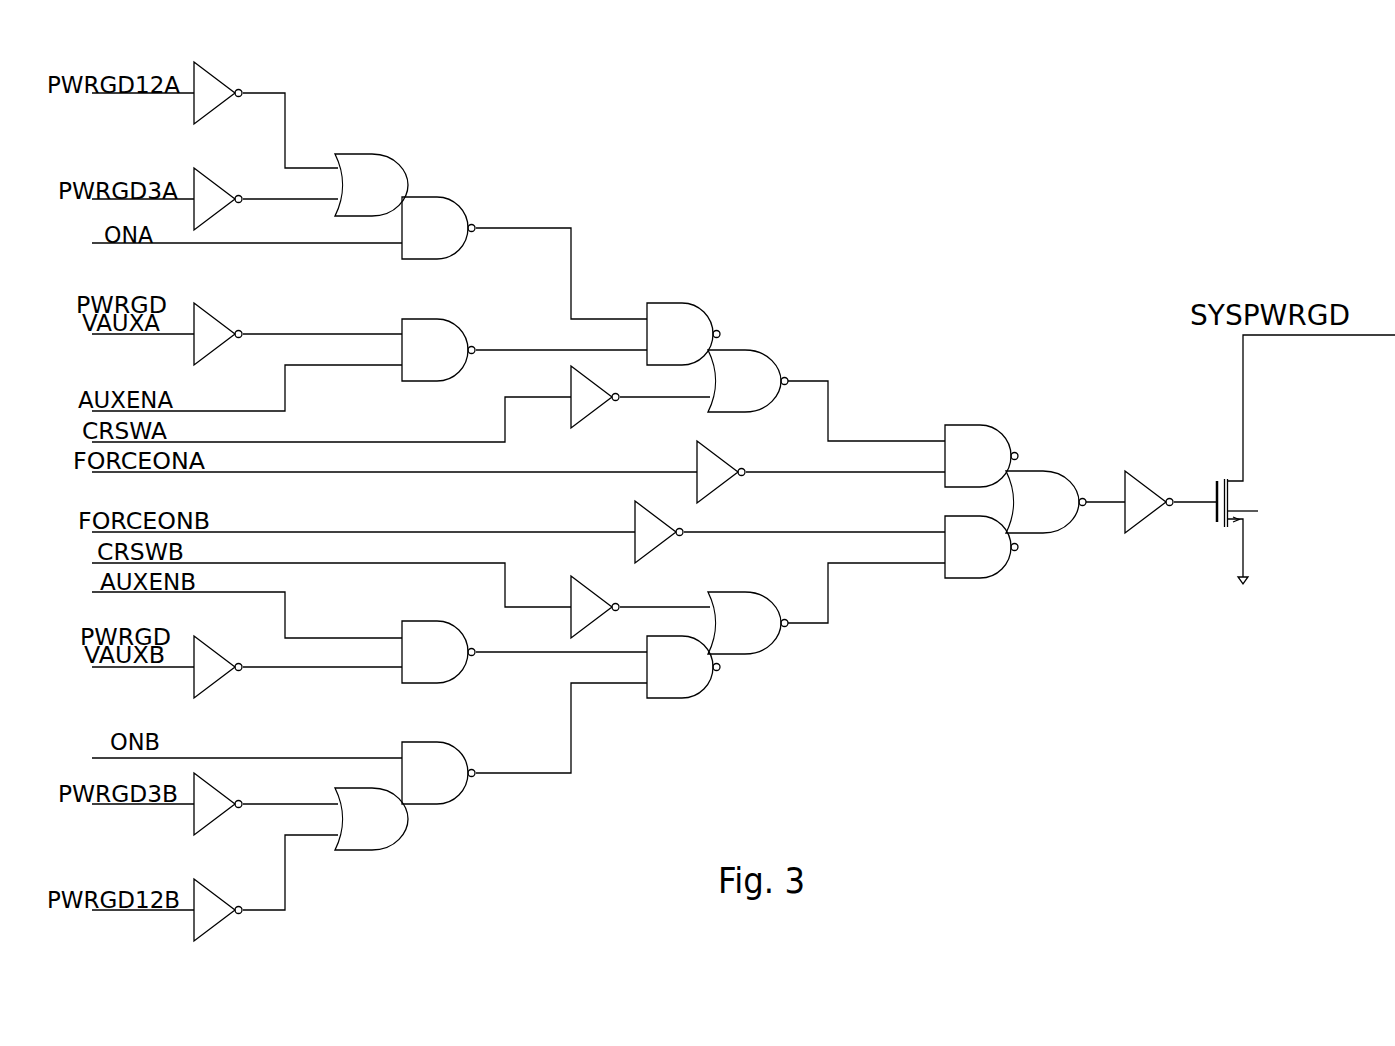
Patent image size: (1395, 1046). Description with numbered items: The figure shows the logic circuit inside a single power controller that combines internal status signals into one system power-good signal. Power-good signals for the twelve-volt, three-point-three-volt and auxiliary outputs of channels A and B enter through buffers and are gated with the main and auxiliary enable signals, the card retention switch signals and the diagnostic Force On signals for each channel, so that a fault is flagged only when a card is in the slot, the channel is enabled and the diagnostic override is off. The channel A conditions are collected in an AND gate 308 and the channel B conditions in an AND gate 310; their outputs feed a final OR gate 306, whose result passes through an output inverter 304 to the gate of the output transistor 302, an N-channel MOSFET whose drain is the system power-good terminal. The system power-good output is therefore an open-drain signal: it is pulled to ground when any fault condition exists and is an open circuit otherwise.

The output transistor driving SYSPWRGD 302 is at (1306, 459).
The output inverter 304 is at (1149, 502).
The final OR gate 306 is at (1046, 502).
The system A AND gate 308 is at (981, 456).
The system B AND gate 310 is at (981, 547).